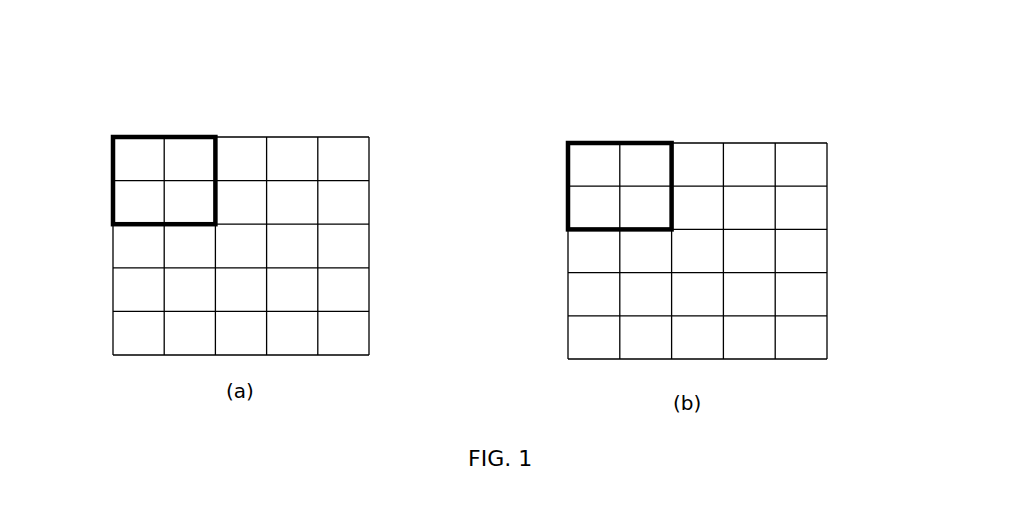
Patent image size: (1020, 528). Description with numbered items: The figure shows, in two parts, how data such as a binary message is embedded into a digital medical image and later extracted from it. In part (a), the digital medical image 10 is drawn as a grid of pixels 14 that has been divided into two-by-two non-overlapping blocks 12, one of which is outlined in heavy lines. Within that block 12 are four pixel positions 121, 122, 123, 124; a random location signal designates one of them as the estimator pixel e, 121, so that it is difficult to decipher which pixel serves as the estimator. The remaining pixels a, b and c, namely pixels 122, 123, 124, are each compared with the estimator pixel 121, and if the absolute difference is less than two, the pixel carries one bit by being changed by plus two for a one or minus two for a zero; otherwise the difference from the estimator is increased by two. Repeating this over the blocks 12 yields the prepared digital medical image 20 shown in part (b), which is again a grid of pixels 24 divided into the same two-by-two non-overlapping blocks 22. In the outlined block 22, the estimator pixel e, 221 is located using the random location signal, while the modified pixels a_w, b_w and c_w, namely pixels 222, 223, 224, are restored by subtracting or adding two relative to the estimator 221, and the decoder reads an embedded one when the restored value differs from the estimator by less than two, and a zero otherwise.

The digital medical image 10 is at (245, 217).
The non-overlapping block 12 is at (156, 180).
The pixels 14 is at (290, 155).
The estimator pixel 121 is at (144, 150).
The pixel a 122 is at (189, 150).
The pixel b 123 is at (132, 206).
The pixel c 124 is at (188, 208).
The prepared digital medical image 20 is at (704, 225).
The non-overlapping block 22 is at (606, 186).
The pixels 24 is at (747, 167).
The estimator pixel 221 is at (590, 150).
The pixel a_w 222 is at (628, 152).
The pixel b_w 223 is at (578, 218).
The pixel c_w 224 is at (635, 217).